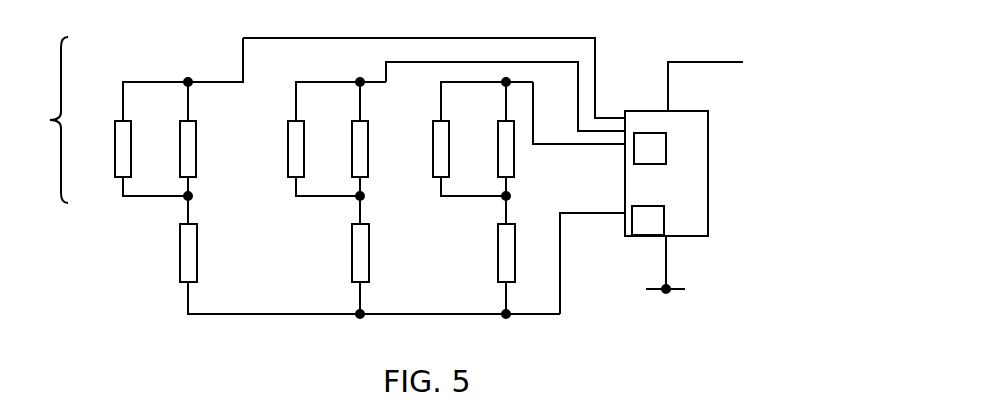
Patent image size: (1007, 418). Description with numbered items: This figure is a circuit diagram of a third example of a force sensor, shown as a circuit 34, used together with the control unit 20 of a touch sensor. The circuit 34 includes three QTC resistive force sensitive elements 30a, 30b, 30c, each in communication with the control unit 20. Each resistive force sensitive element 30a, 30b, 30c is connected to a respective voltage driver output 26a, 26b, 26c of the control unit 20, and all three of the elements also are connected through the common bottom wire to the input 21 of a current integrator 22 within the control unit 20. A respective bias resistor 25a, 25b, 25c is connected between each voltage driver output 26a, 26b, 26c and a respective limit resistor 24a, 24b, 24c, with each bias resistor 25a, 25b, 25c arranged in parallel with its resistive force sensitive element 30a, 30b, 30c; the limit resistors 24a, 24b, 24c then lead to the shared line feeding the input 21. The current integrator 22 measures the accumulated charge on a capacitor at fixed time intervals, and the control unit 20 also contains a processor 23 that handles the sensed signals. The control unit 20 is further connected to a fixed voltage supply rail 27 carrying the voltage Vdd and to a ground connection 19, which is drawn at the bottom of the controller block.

The circuit 34 is at (49, 120).
The resistive force sensitive element 30a is at (115, 152).
The resistive force sensitive element 30b is at (288, 152).
The resistive force sensitive element 30c is at (433, 152).
The bias resistor 25a is at (196, 151).
The bias resistor 25b is at (368, 151).
The bias resistor 25c is at (514, 151).
The limit resistor 24a is at (180, 258).
The limit resistor 24b is at (352, 258).
The limit resistor 24c is at (498, 258).
The voltage driver output 26a is at (624, 112).
The voltage driver output 26b is at (597, 129).
The voltage driver output 26c is at (548, 142).
The input 21 is at (623, 215).
The control unit 20 is at (708, 171).
The processor 23 is at (659, 159).
The current integrator 22 is at (657, 232).
The fixed voltage supply rail 27 is at (700, 61).
The ground GND connection 19 is at (682, 287).